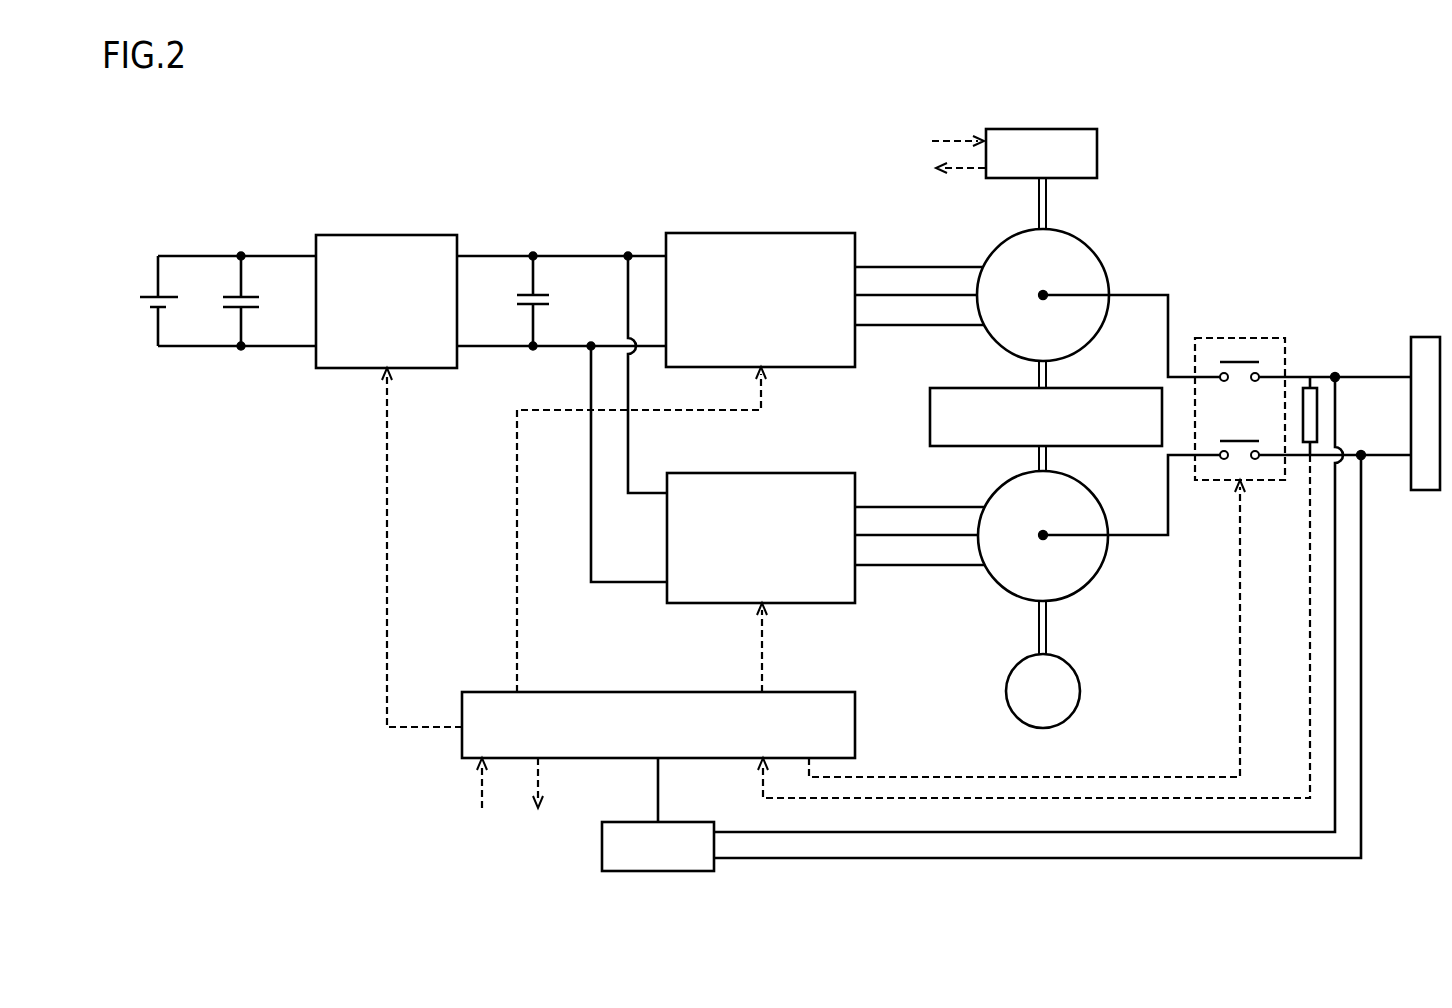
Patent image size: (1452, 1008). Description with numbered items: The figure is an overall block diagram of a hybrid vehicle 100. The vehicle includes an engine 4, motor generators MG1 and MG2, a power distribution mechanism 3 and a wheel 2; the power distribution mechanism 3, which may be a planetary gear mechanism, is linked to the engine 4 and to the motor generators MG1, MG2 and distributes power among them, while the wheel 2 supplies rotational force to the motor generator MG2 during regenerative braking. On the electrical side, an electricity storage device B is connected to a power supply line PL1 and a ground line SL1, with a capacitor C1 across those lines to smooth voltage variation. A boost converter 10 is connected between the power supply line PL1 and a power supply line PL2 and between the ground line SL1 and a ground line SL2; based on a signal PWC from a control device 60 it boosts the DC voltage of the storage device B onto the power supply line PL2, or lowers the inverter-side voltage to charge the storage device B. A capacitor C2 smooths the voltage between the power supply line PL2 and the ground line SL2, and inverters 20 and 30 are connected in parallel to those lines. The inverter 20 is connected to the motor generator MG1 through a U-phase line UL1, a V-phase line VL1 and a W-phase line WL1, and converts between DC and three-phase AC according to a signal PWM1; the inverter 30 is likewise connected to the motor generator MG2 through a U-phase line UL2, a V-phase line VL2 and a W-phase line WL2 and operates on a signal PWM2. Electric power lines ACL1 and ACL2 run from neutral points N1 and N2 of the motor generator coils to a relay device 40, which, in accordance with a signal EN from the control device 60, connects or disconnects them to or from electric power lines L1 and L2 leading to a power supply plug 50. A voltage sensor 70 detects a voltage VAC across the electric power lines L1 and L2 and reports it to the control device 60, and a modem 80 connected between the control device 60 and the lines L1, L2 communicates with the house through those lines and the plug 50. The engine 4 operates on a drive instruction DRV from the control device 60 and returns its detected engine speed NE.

The hybrid vehicle 100 is at (292, 163).
The electricity storage device B is at (168, 298).
The capacitor C1 is at (251, 298).
The capacitor C2 is at (545, 297).
The power supply line PL1 is at (201, 250).
The ground line SL1 is at (200, 352).
The power supply line PL2 is at (581, 250).
The ground line SL2 is at (493, 350).
The boost converter 10 is at (395, 236).
The inverter 20 is at (790, 234).
The inverter 30 is at (790, 474).
The U-phase line UL1 is at (890, 265).
The V-phase line VL1 is at (938, 293).
The W-phase line WL1 is at (905, 327).
The U-phase line UL2 is at (890, 505).
The V-phase line VL2 is at (938, 533).
The W-phase line WL2 is at (905, 567).
The motor generator MG1 is at (1072, 231).
The motor generator MG2 is at (1072, 598).
The neutral point N1 is at (1043, 295).
The neutral point N2 is at (1043, 535).
The electric power line ACL1 is at (1126, 293).
The electric power line ACL2 is at (1126, 537).
The engine 4 is at (1042, 128).
The power distribution mechanism 3 is at (1095, 388).
The wheel 2 is at (1082, 690).
The relay device 40 is at (1251, 338).
The power supply plug 50 is at (1426, 336).
The voltage sensor 70 is at (1309, 374).
The electric power line L1 is at (1375, 375).
The electric power line L2 is at (1386, 458).
The control device 60 is at (808, 692).
The modem 80 is at (624, 822).
The signal PWC is at (422, 547).
The signal PWM1 is at (674, 529).
The signal PWM2 is at (794, 647).
The drive instruction DRV is at (748, 484).
The engine speed NE is at (725, 497).
The voltage VAC is at (1009, 628).
The signal EN is at (1043, 628).